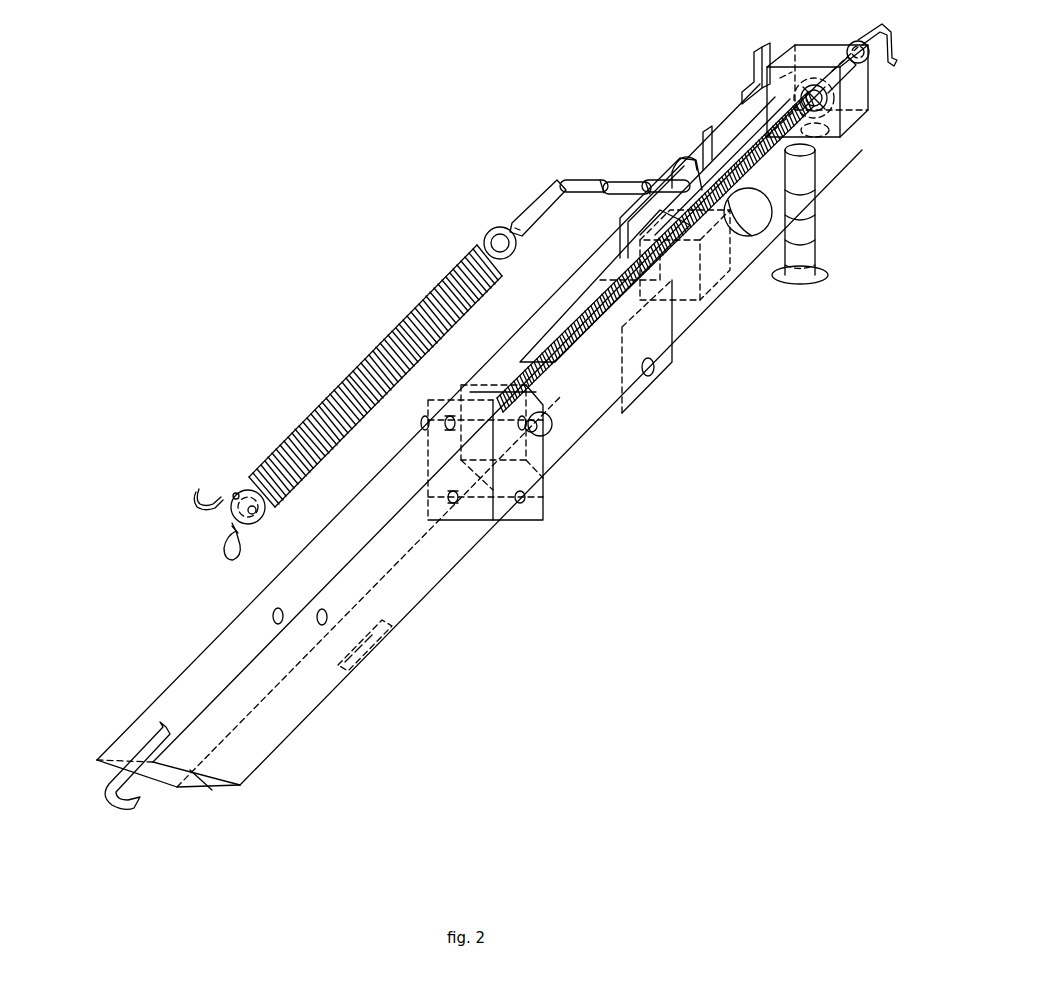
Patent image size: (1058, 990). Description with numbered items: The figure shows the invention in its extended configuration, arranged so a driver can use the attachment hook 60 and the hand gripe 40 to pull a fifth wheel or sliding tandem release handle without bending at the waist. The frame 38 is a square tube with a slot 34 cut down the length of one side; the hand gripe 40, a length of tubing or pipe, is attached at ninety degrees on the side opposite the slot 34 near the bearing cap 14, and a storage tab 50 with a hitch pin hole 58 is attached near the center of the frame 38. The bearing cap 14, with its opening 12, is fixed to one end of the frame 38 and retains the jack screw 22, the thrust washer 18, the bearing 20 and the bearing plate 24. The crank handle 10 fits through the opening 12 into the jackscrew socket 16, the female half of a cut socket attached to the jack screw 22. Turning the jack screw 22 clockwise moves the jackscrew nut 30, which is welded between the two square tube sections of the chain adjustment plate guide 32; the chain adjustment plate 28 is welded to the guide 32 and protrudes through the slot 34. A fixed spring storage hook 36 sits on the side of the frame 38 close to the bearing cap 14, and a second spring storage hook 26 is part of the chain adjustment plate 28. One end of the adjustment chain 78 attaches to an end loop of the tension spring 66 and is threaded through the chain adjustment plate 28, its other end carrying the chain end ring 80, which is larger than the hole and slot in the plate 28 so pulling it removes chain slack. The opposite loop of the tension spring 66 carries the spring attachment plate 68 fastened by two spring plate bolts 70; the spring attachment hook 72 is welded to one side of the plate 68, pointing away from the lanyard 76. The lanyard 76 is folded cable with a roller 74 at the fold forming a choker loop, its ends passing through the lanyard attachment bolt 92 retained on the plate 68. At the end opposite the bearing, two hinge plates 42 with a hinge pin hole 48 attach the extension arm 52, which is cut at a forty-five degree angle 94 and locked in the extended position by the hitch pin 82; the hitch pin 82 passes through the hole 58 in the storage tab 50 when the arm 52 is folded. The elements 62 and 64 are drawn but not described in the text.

The crank handle 10 is at (888, 34).
The opening 12 is at (850, 78).
The bearing cap 14 is at (868, 105).
The jackscrew socket 16 is at (866, 44).
The thrust washer 18 is at (818, 84).
The bearing 20 is at (811, 86).
The jack screw 22 is at (563, 388).
The bearing plate 24 is at (780, 78).
The second spring storage hook 26 is at (706, 130).
The chain adjustment plate 28 is at (678, 156).
The jackscrew nut 30 is at (706, 260).
The chain adjustment plate guide 32 is at (588, 276).
The slot 34 is at (746, 130).
The fixed spring storage hook 36 is at (753, 79).
The frame 38 is at (546, 306).
The hand gripe 40 is at (812, 228).
The hinge plates 42 is at (497, 522).
The hinge pin hole 48 is at (530, 498).
The storage tab 50 is at (672, 324).
The extension arm 52 is at (384, 482).
The hitch pin hole 58 is at (654, 366).
The attachment hook 60 is at (97, 790).
The pins 62 is at (320, 612).
The slot 64 is at (380, 630).
The tension spring 66 is at (286, 437).
The spring attachment plate 68 is at (245, 496).
The spring plate bolts 70 is at (251, 515).
The spring attachment hook 72 is at (198, 507).
The roller 74 is at (228, 532).
The lanyard 76 is at (222, 548).
The adjustment chain 78 is at (556, 191).
The chain end ring 80 is at (752, 226).
The hitch pin 82 is at (549, 432).
The lanyard attachment bolt 92 is at (236, 531).
The forty-five degree angle 94 is at (196, 775).